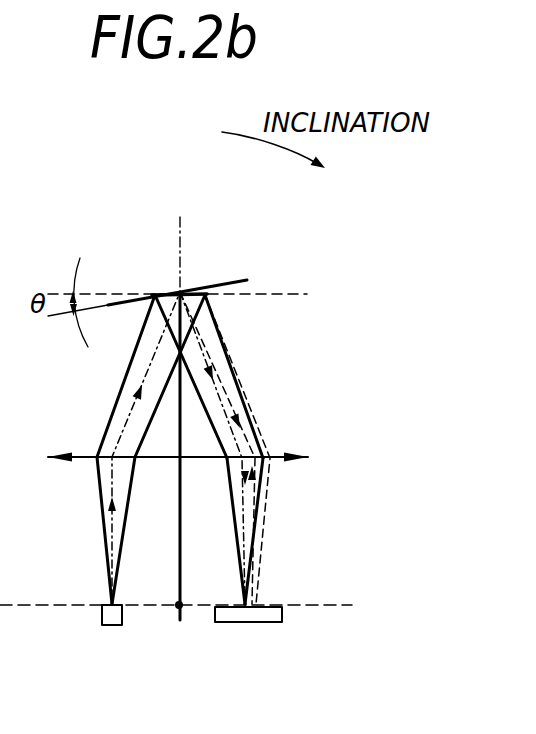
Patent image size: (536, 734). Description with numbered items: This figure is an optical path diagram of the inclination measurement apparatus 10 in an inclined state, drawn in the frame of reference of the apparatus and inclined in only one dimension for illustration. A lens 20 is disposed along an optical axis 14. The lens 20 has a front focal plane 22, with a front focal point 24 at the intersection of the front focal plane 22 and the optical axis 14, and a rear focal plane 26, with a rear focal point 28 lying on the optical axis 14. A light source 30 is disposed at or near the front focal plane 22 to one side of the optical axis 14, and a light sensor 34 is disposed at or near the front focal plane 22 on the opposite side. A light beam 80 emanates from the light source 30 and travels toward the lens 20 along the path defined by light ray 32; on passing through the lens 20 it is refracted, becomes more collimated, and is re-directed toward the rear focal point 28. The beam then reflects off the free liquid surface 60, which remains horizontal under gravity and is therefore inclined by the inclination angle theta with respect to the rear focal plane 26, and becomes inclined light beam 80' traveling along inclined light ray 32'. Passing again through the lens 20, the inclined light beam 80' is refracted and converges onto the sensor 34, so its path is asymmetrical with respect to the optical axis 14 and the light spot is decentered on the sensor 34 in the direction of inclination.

The inclination measurement apparatus 10 is at (150, 225).
The optical axis 14 is at (180, 230).
The lens 20 is at (297, 462).
The front focal plane 22 is at (342, 610).
The front focal point 24 is at (178, 608).
The rear focal plane 26 is at (254, 293).
The rear focal point 28 is at (170, 288).
The light source 30 is at (100, 625).
The light ray 32 is at (109, 449).
The inclined light ray 32' is at (257, 449).
The light sensor 34 is at (262, 625).
The free liquid surface 60 is at (232, 278).
The light beam 80 is at (96, 448).
The inclined light beam 80' is at (270, 448).